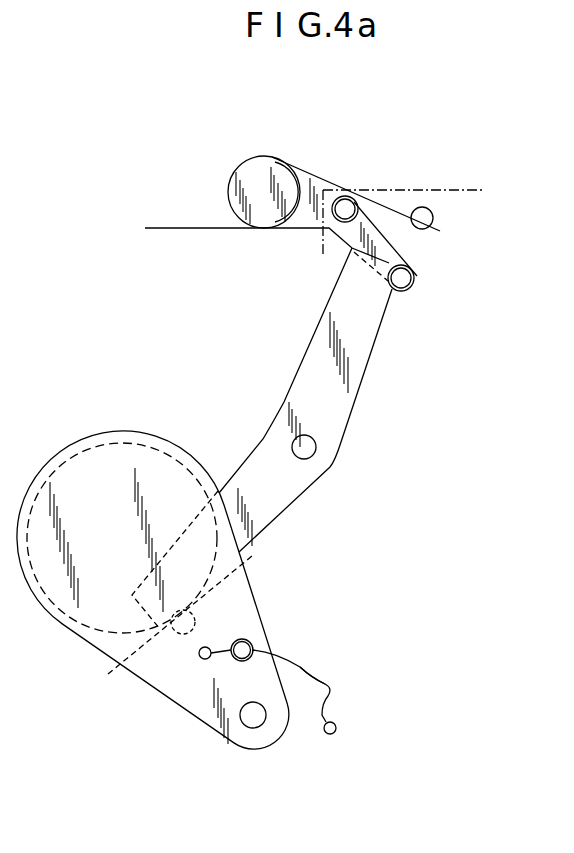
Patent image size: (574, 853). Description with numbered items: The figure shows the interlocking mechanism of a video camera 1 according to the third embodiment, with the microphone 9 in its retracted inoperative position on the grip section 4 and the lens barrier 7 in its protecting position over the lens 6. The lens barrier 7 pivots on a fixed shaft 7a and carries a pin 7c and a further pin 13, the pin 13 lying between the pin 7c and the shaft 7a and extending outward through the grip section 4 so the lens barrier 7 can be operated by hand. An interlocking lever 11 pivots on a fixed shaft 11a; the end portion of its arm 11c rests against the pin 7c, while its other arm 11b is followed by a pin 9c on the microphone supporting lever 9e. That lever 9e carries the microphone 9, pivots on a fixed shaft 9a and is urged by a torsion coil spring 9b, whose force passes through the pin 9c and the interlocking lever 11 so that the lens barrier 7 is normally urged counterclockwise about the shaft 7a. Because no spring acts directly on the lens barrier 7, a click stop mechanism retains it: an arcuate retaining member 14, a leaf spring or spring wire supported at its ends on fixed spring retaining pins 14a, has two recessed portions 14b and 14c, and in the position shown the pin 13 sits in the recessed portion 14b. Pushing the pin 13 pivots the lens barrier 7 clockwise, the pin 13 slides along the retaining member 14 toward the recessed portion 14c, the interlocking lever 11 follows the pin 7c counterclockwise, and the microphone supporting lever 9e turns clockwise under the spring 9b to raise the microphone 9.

The sheet 1 is at (415, 190).
The grip section 4 is at (184, 228).
The lens 6 is at (115, 455).
The lens barrier 7 is at (187, 704).
The fixed shaft 7a is at (252, 718).
The pin 7c is at (137, 655).
The microphone 9 is at (250, 164).
The fixed shaft 9a is at (344, 204).
The torsion coil spring 9b is at (382, 207).
The pin 9c is at (413, 283).
The microphone supporting lever 9e is at (307, 178).
The interlocking lever 11 is at (282, 399).
The fixed shaft 11a is at (316, 447).
The arm 11b is at (357, 355).
The arm 11c is at (282, 493).
The pin 13 is at (255, 646).
The retaining member 14 is at (303, 667).
The spring retaining pins 14a is at (208, 647).
The recessed portion 14b is at (250, 637).
The recessed portion 14c is at (331, 687).